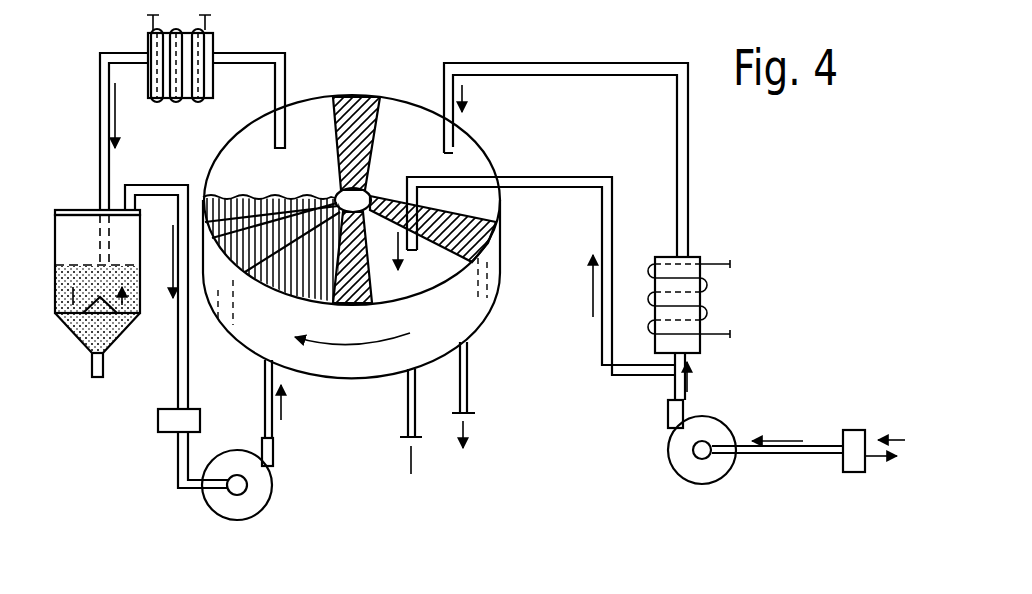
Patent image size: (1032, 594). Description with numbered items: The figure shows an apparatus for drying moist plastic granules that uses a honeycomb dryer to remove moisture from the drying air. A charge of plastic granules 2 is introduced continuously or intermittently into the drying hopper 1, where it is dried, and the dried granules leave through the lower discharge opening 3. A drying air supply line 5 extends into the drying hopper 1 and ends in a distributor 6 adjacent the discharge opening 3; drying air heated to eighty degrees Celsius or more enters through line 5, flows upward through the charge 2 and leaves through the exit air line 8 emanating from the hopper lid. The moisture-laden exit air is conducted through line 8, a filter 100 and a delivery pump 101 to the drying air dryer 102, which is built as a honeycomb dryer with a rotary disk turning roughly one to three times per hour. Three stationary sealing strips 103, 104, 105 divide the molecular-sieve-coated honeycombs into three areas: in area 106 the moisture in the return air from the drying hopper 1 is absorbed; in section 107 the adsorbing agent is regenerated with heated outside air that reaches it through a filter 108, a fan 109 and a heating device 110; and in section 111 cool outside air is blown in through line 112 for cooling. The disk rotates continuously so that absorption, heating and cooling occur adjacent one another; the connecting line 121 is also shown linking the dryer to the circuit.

The drying hopper 1 is at (77, 222).
The plastic granules 2 is at (128, 290).
The lower discharge opening 3 is at (98, 380).
The drying air supply line 5 is at (100, 153).
The distributor 6 is at (81, 349).
The exit air line 8 is at (160, 185).
The filter 100 is at (168, 432).
The delivery pump 101 is at (262, 487).
The drying air dryer 102 is at (349, 64).
The sealing strip 103 is at (360, 108).
The sealing strip 104 is at (490, 246).
The sealing strip 105 is at (352, 287).
The adsorption area 106 is at (257, 267).
The regeneration section 107 is at (467, 155).
The filter 108 is at (853, 475).
The fan 109 is at (707, 428).
The heating device 110 is at (687, 270).
The cooling section 111 is at (423, 275).
The cooling air line 112 is at (205, 45).
The connecting line 121 is at (615, 378).